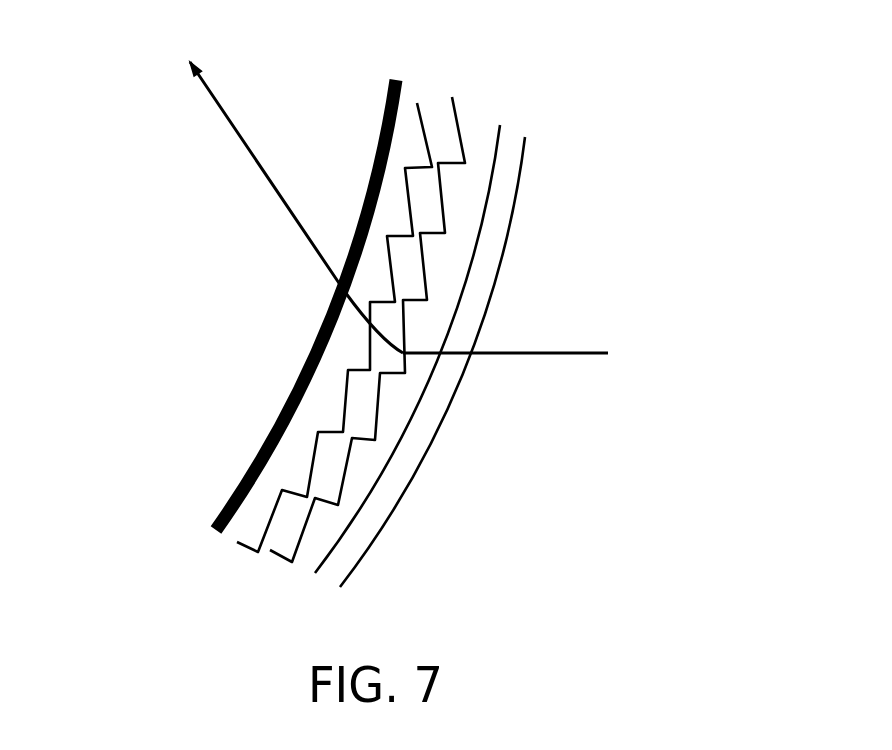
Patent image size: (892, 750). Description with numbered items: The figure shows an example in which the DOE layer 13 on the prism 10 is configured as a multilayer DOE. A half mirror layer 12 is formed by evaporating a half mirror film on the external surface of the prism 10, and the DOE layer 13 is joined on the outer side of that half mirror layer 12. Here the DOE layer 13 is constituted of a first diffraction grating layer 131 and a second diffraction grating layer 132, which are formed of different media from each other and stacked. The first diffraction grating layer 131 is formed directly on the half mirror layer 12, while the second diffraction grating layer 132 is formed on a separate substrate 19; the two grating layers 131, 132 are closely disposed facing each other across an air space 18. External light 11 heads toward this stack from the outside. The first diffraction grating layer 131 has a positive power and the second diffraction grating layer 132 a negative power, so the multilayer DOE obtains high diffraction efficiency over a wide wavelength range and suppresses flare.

The prism 10 is at (197, 331).
The external light 11 is at (599, 352).
The half mirror layer 12 is at (402, 118).
The DOE layer 13 is at (311, 366).
The first diffraction grating layer 131 is at (288, 465).
The second diffraction grating layer 132 is at (394, 329).
The air space 18 is at (437, 132).
The substrate 19 is at (502, 205).